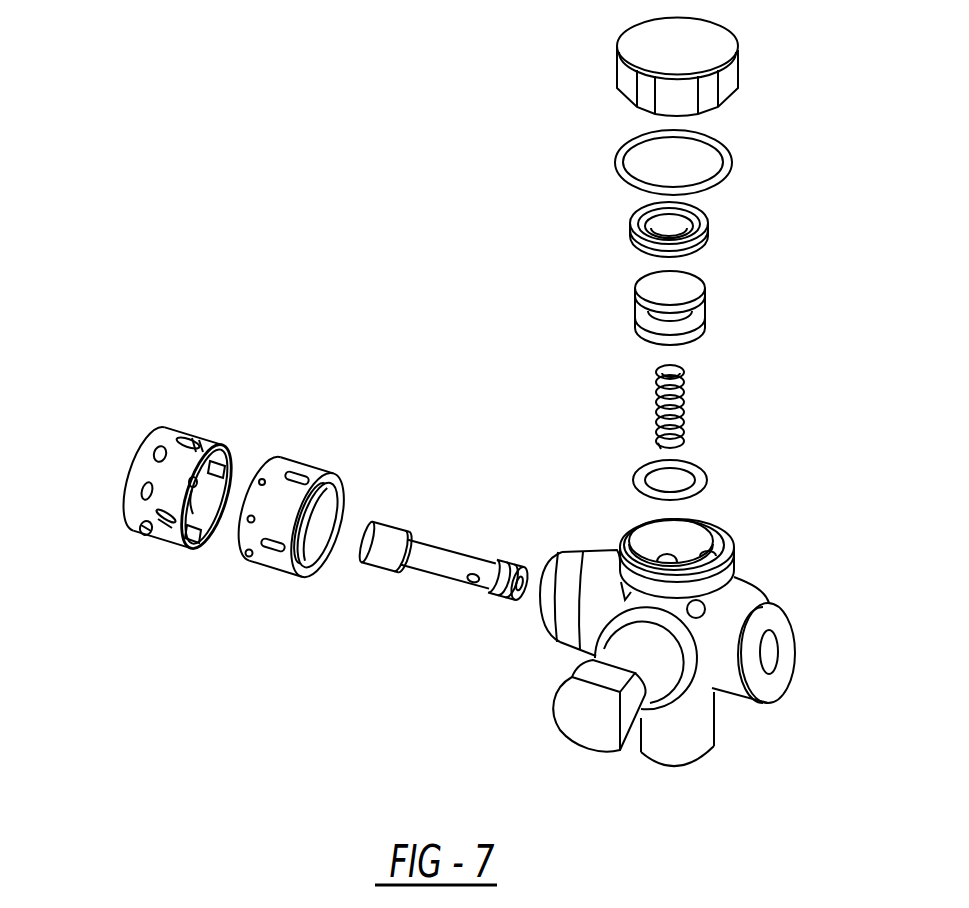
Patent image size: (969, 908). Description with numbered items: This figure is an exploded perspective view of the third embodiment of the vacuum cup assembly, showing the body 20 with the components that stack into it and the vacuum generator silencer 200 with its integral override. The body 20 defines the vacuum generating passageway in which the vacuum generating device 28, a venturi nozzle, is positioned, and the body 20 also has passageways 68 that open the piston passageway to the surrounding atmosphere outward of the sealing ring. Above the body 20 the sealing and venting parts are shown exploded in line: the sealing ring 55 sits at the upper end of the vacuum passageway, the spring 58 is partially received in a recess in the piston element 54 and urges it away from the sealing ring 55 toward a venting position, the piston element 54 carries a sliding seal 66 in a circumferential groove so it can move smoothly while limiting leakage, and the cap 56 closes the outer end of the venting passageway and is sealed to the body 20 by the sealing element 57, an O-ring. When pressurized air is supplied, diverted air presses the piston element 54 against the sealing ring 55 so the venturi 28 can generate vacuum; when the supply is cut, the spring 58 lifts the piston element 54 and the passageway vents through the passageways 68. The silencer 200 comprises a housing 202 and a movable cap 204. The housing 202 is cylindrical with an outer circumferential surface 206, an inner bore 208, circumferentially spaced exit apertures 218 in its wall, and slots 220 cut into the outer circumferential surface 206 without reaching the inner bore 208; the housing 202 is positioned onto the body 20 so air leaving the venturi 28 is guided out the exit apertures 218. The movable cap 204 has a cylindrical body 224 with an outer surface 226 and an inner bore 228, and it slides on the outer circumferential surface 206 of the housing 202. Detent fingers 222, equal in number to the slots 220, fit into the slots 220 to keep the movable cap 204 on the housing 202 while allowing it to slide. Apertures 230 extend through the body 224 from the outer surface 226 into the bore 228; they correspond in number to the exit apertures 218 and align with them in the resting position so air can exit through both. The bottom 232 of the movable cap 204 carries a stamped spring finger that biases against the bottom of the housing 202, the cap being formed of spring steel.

The body 20 is at (703, 634).
The vacuum generating device 28 is at (457, 537).
The piston element 54 is at (603, 292).
The sealing ring 55 is at (703, 473).
The cap 56 is at (717, 51).
The sealing element 57 is at (727, 152).
The spring 58 is at (683, 400).
The sliding seal 66 is at (708, 221).
The passageways 68 is at (692, 612).
The vacuum generator silencer 200 is at (265, 300).
The housing 202 is at (355, 517).
The movable cap 204 is at (182, 477).
The outer circumferential surface 206 is at (283, 560).
The inner bore 208 is at (330, 506).
The exit apertures 218 is at (252, 557).
The slots 220 is at (307, 475).
The detent fingers 222 is at (173, 520).
The cylindrical body 224 is at (213, 447).
The outer surface 226 is at (153, 442).
The inner bore 228 is at (207, 517).
The apertures 230 is at (147, 530).
The bottom 232 is at (123, 476).